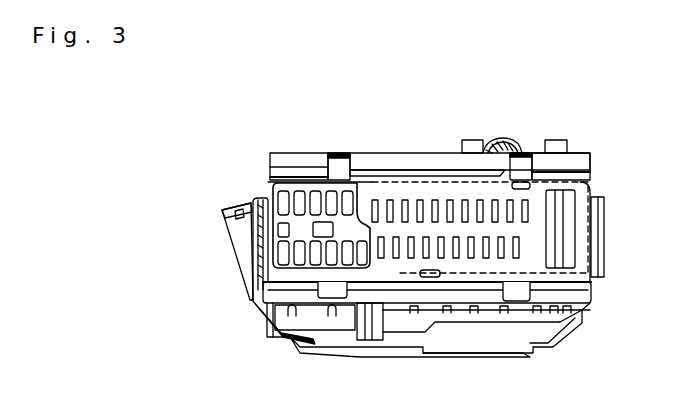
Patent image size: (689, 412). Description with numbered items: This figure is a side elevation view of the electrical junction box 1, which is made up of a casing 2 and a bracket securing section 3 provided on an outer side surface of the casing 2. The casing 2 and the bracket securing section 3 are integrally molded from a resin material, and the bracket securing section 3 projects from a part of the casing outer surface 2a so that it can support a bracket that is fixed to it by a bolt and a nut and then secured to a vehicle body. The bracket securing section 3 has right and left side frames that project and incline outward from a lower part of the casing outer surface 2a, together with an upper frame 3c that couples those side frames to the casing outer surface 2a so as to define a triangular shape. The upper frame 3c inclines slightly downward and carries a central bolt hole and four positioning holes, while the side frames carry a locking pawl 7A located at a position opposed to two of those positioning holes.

The electrical junction box 1 is at (403, 106).
The casing 2 is at (593, 190).
The casing outer surface 2a is at (263, 300).
The bracket securing section 3 is at (240, 266).
The upper frame 3c is at (243, 205).
The locking pawl 7A is at (224, 213).